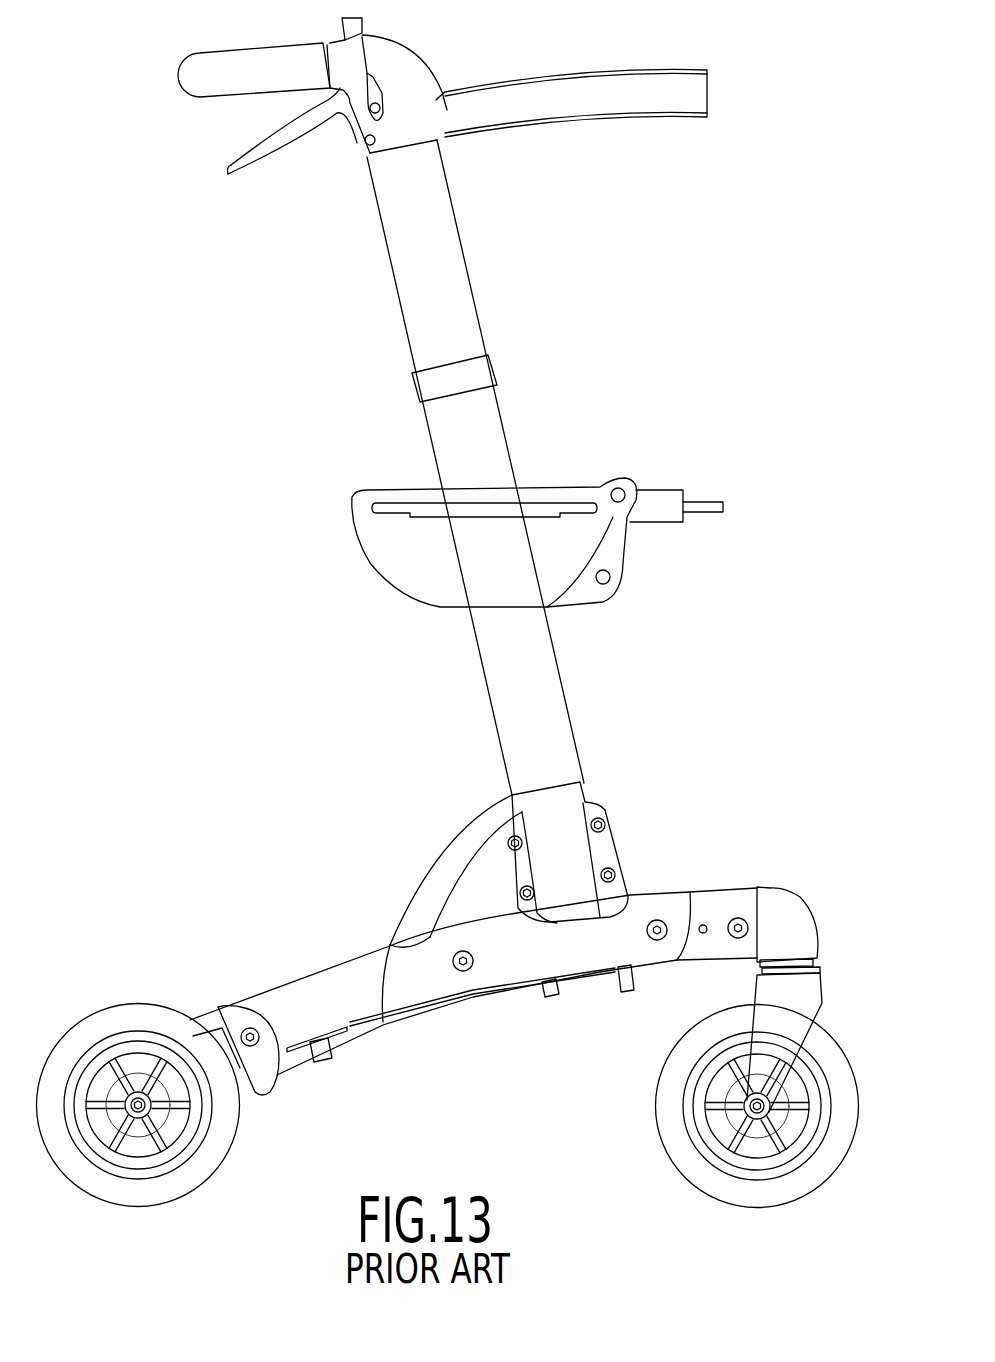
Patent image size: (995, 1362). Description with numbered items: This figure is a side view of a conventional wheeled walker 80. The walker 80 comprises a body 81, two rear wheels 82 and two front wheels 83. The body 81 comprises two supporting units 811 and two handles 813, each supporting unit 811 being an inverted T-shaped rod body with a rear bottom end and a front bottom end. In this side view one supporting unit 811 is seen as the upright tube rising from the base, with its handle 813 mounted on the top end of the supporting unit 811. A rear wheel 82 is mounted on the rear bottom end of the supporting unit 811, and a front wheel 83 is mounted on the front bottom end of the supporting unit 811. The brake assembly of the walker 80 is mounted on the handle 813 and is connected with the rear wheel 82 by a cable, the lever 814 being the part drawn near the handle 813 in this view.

The wheeled walker 80 is at (742, 162).
The body 81 is at (306, 400).
The supporting unit 811 is at (483, 445).
The handle 813 is at (246, 66).
The brake lever 814 is at (270, 143).
The rear wheel 82 is at (137, 1015).
The front wheel 83 is at (672, 1127).